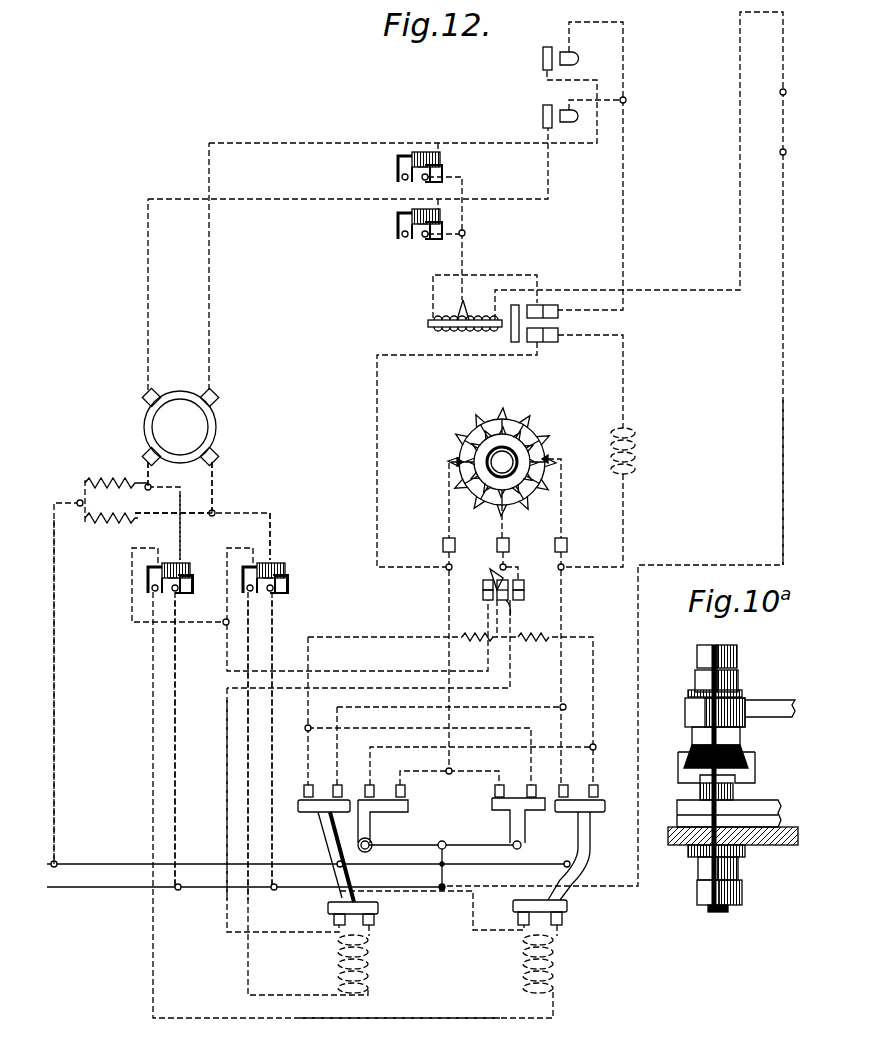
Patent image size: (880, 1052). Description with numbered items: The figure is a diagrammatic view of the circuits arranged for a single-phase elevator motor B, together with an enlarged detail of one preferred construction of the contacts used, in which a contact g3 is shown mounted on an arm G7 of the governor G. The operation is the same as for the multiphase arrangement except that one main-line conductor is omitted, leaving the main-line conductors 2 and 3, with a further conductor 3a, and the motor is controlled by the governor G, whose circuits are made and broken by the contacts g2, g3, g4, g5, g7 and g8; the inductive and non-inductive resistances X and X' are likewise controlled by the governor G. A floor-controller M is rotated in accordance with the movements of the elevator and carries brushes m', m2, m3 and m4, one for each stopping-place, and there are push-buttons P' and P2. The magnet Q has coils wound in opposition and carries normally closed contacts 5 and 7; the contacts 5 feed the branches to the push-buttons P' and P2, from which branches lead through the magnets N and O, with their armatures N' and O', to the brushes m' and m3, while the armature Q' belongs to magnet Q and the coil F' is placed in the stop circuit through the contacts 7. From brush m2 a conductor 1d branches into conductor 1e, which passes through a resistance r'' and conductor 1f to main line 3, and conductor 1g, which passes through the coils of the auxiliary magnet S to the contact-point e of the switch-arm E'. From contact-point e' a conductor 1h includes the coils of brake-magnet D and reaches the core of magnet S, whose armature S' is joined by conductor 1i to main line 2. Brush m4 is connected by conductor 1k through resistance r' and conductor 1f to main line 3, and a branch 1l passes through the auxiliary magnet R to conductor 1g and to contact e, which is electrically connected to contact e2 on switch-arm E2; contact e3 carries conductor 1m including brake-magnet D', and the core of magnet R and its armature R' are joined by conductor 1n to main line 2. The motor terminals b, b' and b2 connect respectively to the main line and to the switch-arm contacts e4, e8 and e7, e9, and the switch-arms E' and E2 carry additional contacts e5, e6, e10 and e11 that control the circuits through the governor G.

In FIG. 12, the push-button P' is at (542, 58).
In FIG. 12, the push-button P2 is at (541, 116).
In FIG. 12, the magnet N is at (406, 167).
In FIG. 12, the armature N' is at (448, 169).
In FIG. 12, the magnet O is at (408, 224).
In FIG. 12, the armature O' is at (436, 244).
In FIG. 12, the magnet Q is at (465, 314).
In FIG. 12, the armature Q' is at (545, 323).
In FIG. 12, the contacts 5 is at (542, 303).
In FIG. 12, the contacts 7 is at (542, 344).
In FIG. 12, the motor B is at (502, 452).
In FIG. 12, the coil F' is at (635, 451).
In FIG. 12, the floor-controller M is at (180, 427).
In FIG. 12, the brush m' is at (222, 397).
In FIG. 12, the brush m2 is at (217, 455).
In FIG. 12, the brush m3 is at (145, 398).
In FIG. 12, the brush m4 is at (145, 452).
In FIG. 12, the conductor 1k is at (159, 474).
In FIG. 12, the conductor 1d is at (223, 487).
In FIG. 12, the conductor branch 1e is at (173, 504).
In FIG. 12, the conductor branch 1l is at (192, 570).
In FIG. 12, the conductor branch 1g is at (306, 706).
In FIG. 12, the conductor 1f is at (65, 692).
In FIG. 12, the conductor 1n is at (185, 743).
In FIG. 12, the conductor 1h is at (258, 750).
In FIG. 12, the conductor 1i is at (281, 743).
In FIG. 12, the conductor 1m is at (400, 1007).
In FIG. 12, the conductor 3a is at (764, 482).
In FIG. 12, the resistance r' is at (111, 528).
In FIG. 12, the resistance r'' is at (116, 491).
In FIG. 12, the auxiliary magnet R is at (174, 569).
In FIG. 12, the armature R' is at (194, 595).
In FIG. 12, the auxiliary magnet S is at (270, 569).
In FIG. 12, the armature S' is at (288, 592).
In FIG. 12, the main-line conductor 2 is at (307, 855).
In FIG. 12, the main-line conductor 3 is at (244, 897).
In FIG. 12, the motor terminal b is at (510, 546).
In FIG. 12, the motor terminal b' is at (459, 546).
In FIG. 12, the motor terminal b2 is at (571, 545).
In FIG. 12, the governor G is at (520, 580).
In FIG. 10A, the governor G is at (790, 852).
In FIG. 12, the governor contact g2 is at (483, 583).
In FIG. 12, the governor contact g3 is at (524, 584).
In FIG. 10A, the governor contact g3 is at (678, 757).
In FIG. 12, the governor contact g4 is at (483, 598).
In FIG. 12, the governor contact g5 is at (524, 598).
In FIG. 12, the governor contact g7 is at (505, 614).
In FIG. 12, the governor contact g8 is at (486, 570).
In FIG. 10A, the arm G7 is at (787, 700).
In FIG. 12, the inductive resistance X is at (477, 647).
In FIG. 12, the non-inductive resistance X' is at (533, 647).
In FIG. 12, the contact-point e is at (325, 923).
In FIG. 12, the contact-point e' is at (380, 923).
In FIG. 12, the contact e2 is at (518, 922).
In FIG. 12, the contact e3 is at (562, 922).
In FIG. 12, the switch-arm contact e4 is at (299, 786).
In FIG. 12, the contact e5 is at (330, 785).
In FIG. 12, the contact e6 is at (378, 784).
In FIG. 12, the switch-arm contact e7 is at (411, 784).
In FIG. 12, the switch-arm contact e8 is at (488, 786).
In FIG. 12, the switch-arm contact e9 is at (523, 785).
In FIG. 12, the contact e10 is at (575, 784).
In FIG. 12, the contact e11 is at (607, 784).
In FIG. 12, the switch-arm E' is at (338, 857).
In FIG. 12, the switch-arm E2 is at (559, 856).
In FIG. 12, the brake-magnet D is at (366, 964).
In FIG. 12, the brake-magnet D' is at (552, 964).